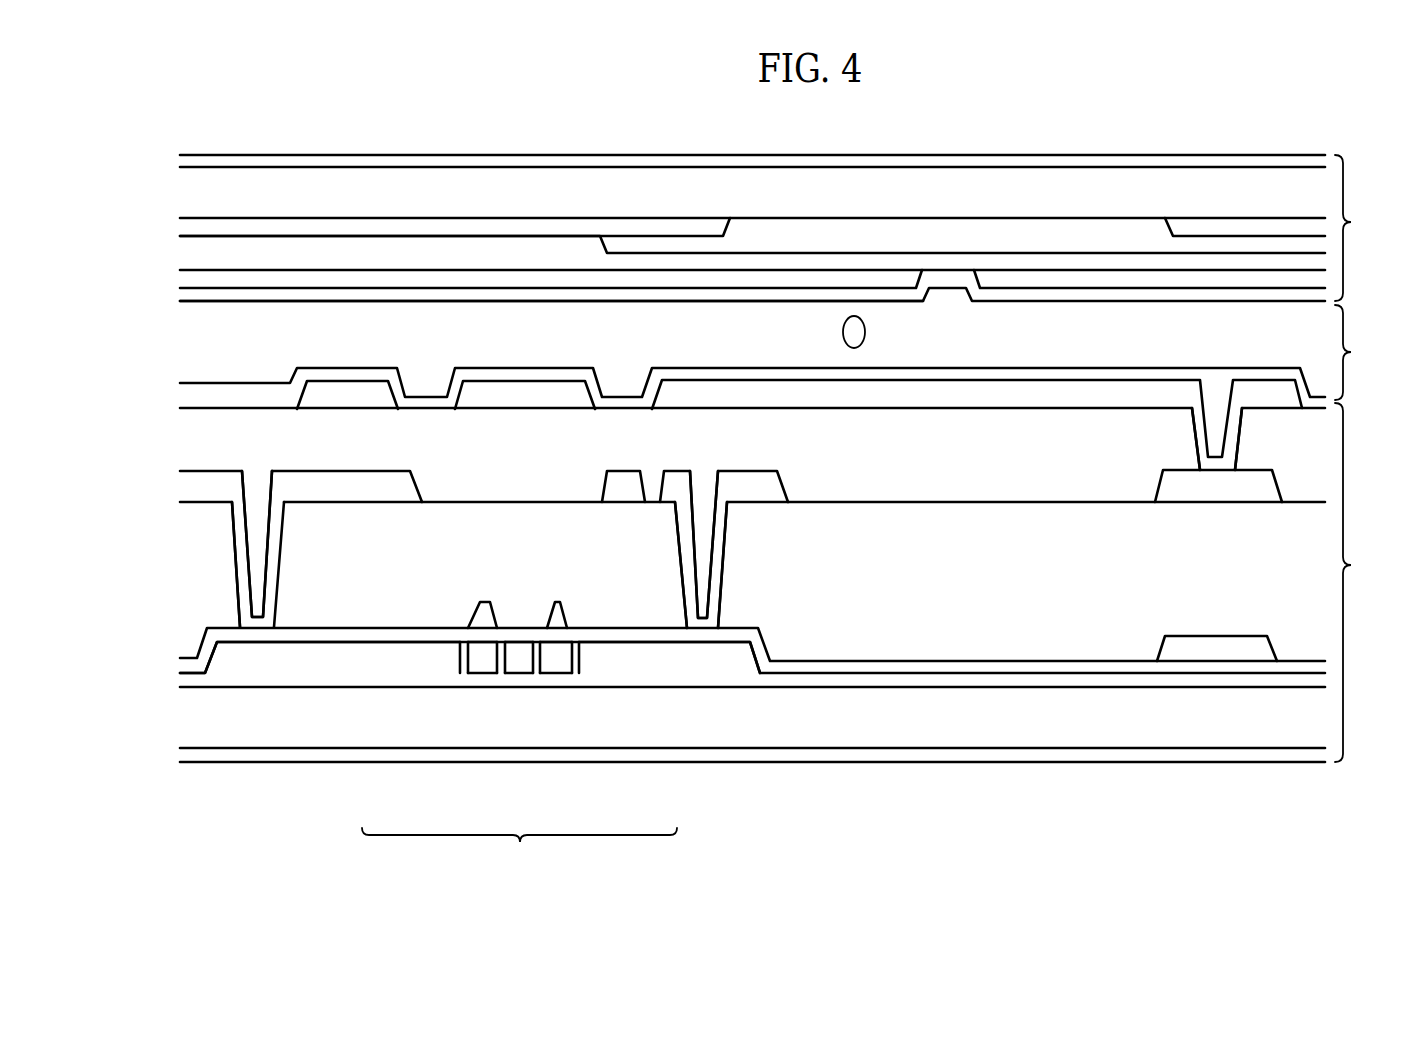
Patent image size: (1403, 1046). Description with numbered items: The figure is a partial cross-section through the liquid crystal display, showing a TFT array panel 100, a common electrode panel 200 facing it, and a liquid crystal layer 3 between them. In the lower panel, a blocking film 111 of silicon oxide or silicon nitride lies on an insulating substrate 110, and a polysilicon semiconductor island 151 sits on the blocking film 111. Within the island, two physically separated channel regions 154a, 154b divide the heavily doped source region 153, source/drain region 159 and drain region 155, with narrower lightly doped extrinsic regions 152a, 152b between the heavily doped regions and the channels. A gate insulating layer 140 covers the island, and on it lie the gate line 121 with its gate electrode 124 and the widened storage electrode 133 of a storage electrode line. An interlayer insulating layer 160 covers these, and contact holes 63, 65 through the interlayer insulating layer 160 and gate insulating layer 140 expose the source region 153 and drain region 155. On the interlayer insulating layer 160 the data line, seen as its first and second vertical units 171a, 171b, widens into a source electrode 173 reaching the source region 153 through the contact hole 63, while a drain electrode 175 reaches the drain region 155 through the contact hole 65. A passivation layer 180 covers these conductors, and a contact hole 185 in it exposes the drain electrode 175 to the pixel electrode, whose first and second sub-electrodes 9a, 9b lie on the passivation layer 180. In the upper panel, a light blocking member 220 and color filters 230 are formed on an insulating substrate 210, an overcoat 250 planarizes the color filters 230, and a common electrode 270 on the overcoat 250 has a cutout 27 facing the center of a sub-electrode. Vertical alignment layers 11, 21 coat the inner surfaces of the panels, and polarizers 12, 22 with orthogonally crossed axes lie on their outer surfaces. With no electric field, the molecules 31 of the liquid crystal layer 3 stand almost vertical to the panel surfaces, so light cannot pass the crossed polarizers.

The liquid crystal layer 3 is at (1346, 352).
The first sub-electrode 9a is at (527, 390).
The second sub-electrode 9b is at (350, 388).
The alignment layer 11 is at (981, 374).
The polarizer 12 is at (942, 757).
The alignment layer 21 is at (1097, 297).
The polarizer 22 is at (477, 157).
The cutout 27 is at (970, 290).
The liquid crystal molecule 31 is at (865, 332).
The contact hole 63 is at (282, 523).
The contact hole 65 is at (725, 538).
The TFT array panel 100 is at (1358, 582).
The insulating substrate 110 is at (980, 730).
The blocking film 111 is at (1030, 683).
The gate line 121 is at (482, 608).
The gate electrode 124 is at (554, 608).
The storage electrode 133 is at (1248, 652).
The gate insulating layer 140 is at (1082, 667).
The semiconductor island 151 is at (752, 755).
The lightly doped extrinsic region 152a is at (463, 668).
The lightly doped extrinsic region 152b is at (538, 668).
The source region 153 is at (363, 662).
The channel region 154a is at (483, 668).
The channel region 154b is at (556, 668).
The drain region 155 is at (678, 665).
The source/drain region 159 is at (520, 668).
The interlayer insulating layer 160 is at (1127, 640).
The first vertical unit 171a is at (622, 478).
The second vertical unit 171b is at (202, 481).
The source electrode 173 is at (328, 483).
The drain electrode 175 is at (750, 482).
The passivation layer 180 is at (903, 487).
The contact hole 185 is at (1230, 438).
The common electrode panel 200 is at (1358, 228).
The insulating substrate 210 is at (531, 178).
The light blocking member 220 is at (660, 228).
The color filter 230 is at (938, 237).
The overcoat 250 is at (1048, 263).
The common electrode 270 is at (843, 278).